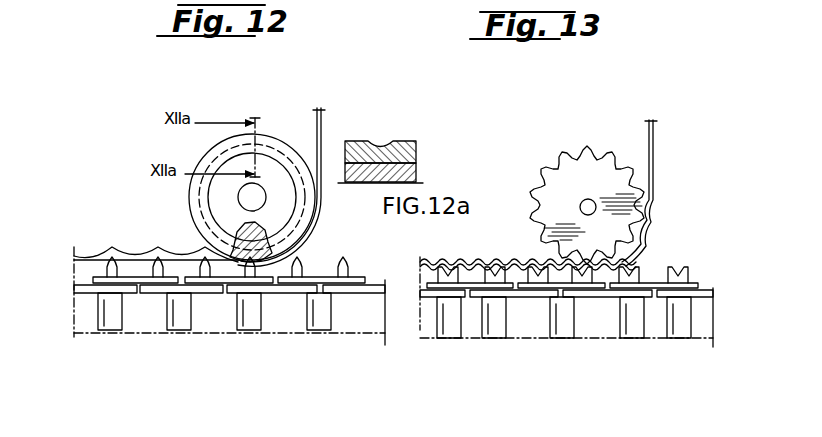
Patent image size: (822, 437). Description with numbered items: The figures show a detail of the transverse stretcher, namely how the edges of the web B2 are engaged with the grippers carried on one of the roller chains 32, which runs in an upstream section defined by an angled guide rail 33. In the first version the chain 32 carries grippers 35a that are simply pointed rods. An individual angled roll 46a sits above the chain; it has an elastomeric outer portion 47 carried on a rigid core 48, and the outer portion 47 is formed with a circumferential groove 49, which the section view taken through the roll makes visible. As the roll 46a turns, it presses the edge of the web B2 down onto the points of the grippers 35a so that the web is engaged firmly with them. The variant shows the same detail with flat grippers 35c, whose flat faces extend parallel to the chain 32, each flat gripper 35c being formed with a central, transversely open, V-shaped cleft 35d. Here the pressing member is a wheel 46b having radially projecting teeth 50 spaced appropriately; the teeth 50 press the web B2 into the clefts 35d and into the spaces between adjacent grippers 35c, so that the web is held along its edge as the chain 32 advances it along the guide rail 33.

In FIG. 12, the roller chain 32 is at (258, 342).
In FIG. 13, the roller chain 32 is at (540, 347).
In FIG. 12, the angled guide rail 33 is at (367, 325).
In FIG. 13, the angled guide rail 33 is at (425, 332).
In FIG. 12, the gripper 35a is at (343, 258).
In FIG. 13, the flat gripper 35c is at (640, 280).
In FIG. 13, the V-shaped cleft 35d is at (687, 265).
In FIG. 12, the angled roll 46a is at (188, 211).
In FIG. 13, the toothed wheel 46b is at (598, 165).
In FIG. 12, the elastomeric outer portion 47 is at (268, 138).
In FIG. 12A, the elastomeric outer portion 47 is at (415, 152).
In FIG. 12, the rigid core 48 is at (238, 168).
In FIG. 12, the circumferential groove 49 is at (210, 158).
In FIG. 12A, the circumferential groove 49 is at (380, 145).
In FIG. 13, the radially projecting tooth 50 is at (532, 178).
In FIG. 12, the web B2 is at (329, 165).
In FIG. 13, the web B2 is at (663, 188).